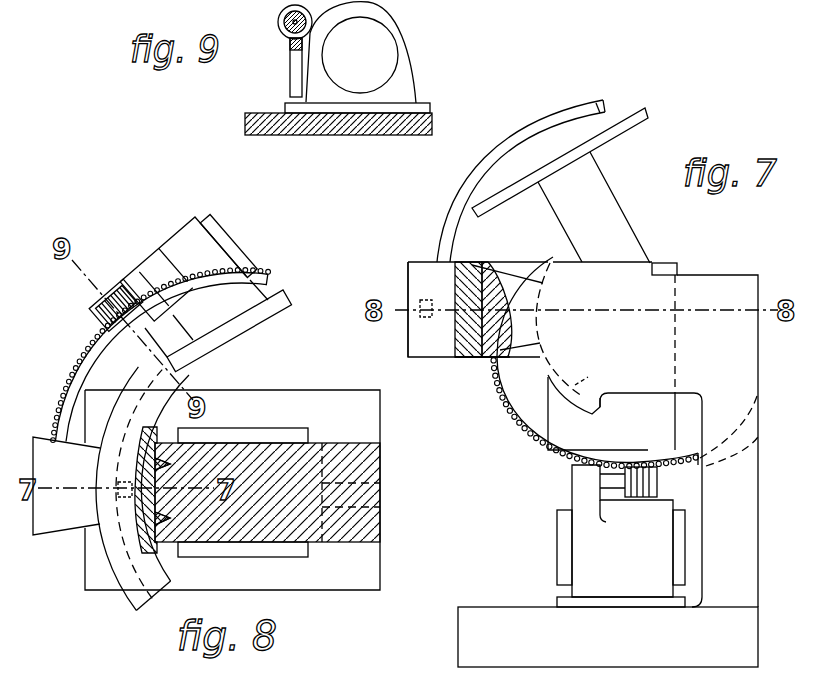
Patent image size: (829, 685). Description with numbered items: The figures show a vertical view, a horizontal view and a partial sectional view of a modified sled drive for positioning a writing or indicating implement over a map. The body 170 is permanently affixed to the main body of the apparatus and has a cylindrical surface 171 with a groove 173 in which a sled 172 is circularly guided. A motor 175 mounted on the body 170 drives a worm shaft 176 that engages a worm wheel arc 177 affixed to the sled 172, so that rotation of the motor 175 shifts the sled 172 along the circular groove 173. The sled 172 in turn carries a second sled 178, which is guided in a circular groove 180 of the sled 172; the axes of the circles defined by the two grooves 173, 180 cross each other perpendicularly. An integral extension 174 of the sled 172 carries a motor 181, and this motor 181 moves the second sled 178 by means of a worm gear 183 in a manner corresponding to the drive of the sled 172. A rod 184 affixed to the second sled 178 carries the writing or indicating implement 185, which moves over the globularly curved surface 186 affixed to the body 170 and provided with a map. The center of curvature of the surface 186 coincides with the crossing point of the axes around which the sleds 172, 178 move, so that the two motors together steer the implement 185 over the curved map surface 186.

In FIG. 7, the body 170 is at (583, 464).
In FIG. 8, the body 170 is at (263, 402).
In FIG. 7, the cylindrical surface 171 is at (570, 384).
In FIG. 8, the cylindrical surface 171 is at (159, 455).
In FIG. 7, the sled 172 is at (483, 358).
In FIG. 8, the sled 172 is at (140, 591).
In FIG. 7, the groove 173 is at (592, 394).
In FIG. 8, the groove 173 is at (200, 442).
In FIG. 9, the integral extension 174 is at (245, 123).
In FIG. 7, the integral extension 174 is at (625, 441).
In FIG. 8, the integral extension 174 is at (257, 327).
In FIG. 7, the motor 175 is at (621, 536).
In FIG. 8, the motor 175 is at (292, 547).
In FIG. 7, the worm shaft 176 is at (655, 472).
In FIG. 7, the worm wheel arc 177 is at (528, 410).
In FIG. 8, the worm wheel arc 177 is at (161, 355).
In FIG. 7, the second sled 178 is at (427, 309).
In FIG. 8, the second sled 178 is at (66, 486).
In FIG. 7, the circular groove 180 is at (493, 263).
In FIG. 8, the circular groove 180 is at (108, 543).
In FIG. 9, the motor 181 is at (398, 85).
In FIG. 8, the motor 181 is at (188, 275).
In FIG. 9, the worm gear 183 is at (289, 33).
In FIG. 8, the worm gear 183 is at (110, 320).
In FIG. 7, the rod 184 is at (467, 190).
In FIG. 7, the writing or indicating implement 185 is at (605, 112).
In FIG. 7, the globularly curved surface 186 is at (574, 191).